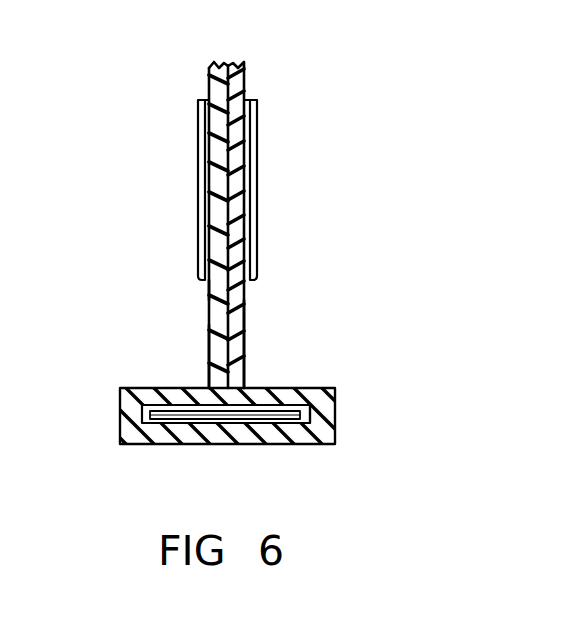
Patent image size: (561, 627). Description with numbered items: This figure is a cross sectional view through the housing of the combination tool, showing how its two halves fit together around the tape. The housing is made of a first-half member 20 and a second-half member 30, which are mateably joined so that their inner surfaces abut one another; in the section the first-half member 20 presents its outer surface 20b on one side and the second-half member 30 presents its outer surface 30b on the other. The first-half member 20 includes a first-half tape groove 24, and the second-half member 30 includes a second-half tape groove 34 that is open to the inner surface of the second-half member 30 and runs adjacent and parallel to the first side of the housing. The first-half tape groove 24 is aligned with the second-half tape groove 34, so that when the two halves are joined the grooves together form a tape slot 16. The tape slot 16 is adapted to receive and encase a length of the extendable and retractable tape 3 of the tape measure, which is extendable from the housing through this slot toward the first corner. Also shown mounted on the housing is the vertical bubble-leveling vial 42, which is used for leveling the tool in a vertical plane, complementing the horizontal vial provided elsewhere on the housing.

The first-half member 20 is at (247, 295).
The outer surface of the first-half member 20b is at (247, 342).
The second-half member 30 is at (209, 288).
The outer surface of the second-half member 30b is at (208, 332).
The vertical bubble-leveling vial 42 is at (257, 190).
The first-half tape groove 24 is at (318, 388).
The second-half tape groove 34 is at (168, 417).
The tape slot 16 is at (218, 421).
The extendable and retractable tape 3 is at (260, 413).